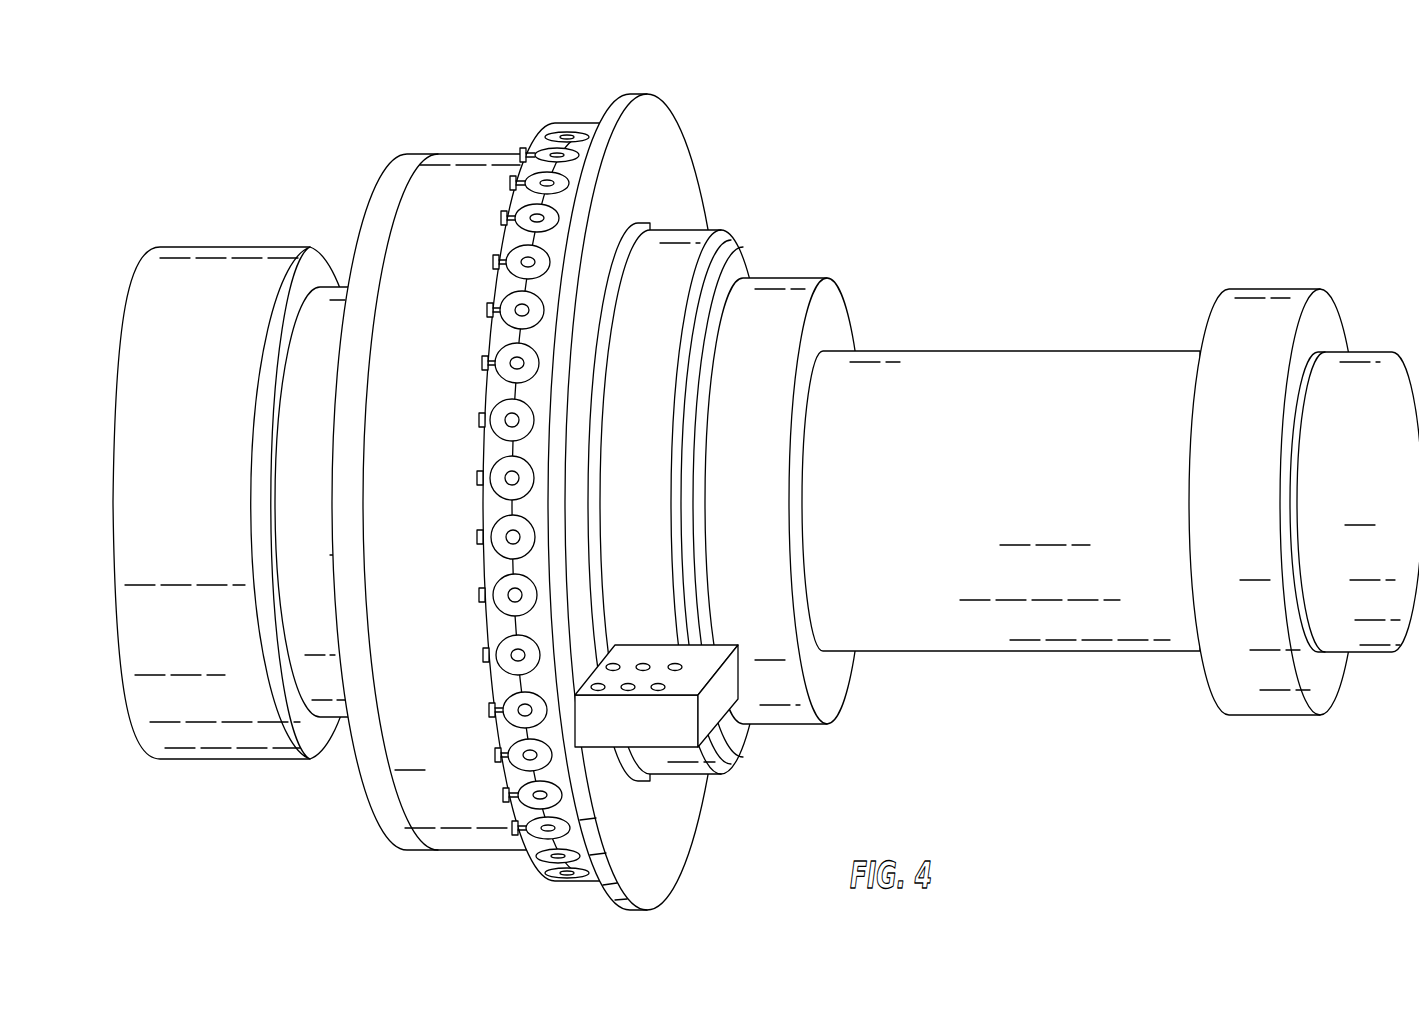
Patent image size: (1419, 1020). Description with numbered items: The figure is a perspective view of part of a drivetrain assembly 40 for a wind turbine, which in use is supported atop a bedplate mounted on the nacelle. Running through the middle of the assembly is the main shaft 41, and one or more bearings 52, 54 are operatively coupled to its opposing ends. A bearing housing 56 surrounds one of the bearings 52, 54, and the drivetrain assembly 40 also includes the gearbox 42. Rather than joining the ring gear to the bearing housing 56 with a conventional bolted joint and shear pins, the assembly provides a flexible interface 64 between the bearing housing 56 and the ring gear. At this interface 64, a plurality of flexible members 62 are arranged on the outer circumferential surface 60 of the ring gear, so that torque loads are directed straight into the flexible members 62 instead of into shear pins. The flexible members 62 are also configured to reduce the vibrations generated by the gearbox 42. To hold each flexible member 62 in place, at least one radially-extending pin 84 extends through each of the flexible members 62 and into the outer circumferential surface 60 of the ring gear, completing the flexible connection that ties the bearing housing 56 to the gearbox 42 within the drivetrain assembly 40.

The drivetrain assembly 40 is at (766, 471).
The main shaft 41 is at (1082, 372).
The gearbox 42 is at (569, 471).
The bearing 52 is at (1285, 316).
The bearing 54 is at (781, 300).
The bearing housing 56 is at (678, 242).
The outer circumferential surface 60 is at (446, 178).
The flexible member 62 is at (525, 310).
The interface 64 is at (565, 108).
The radially-extending pin 84 is at (527, 755).